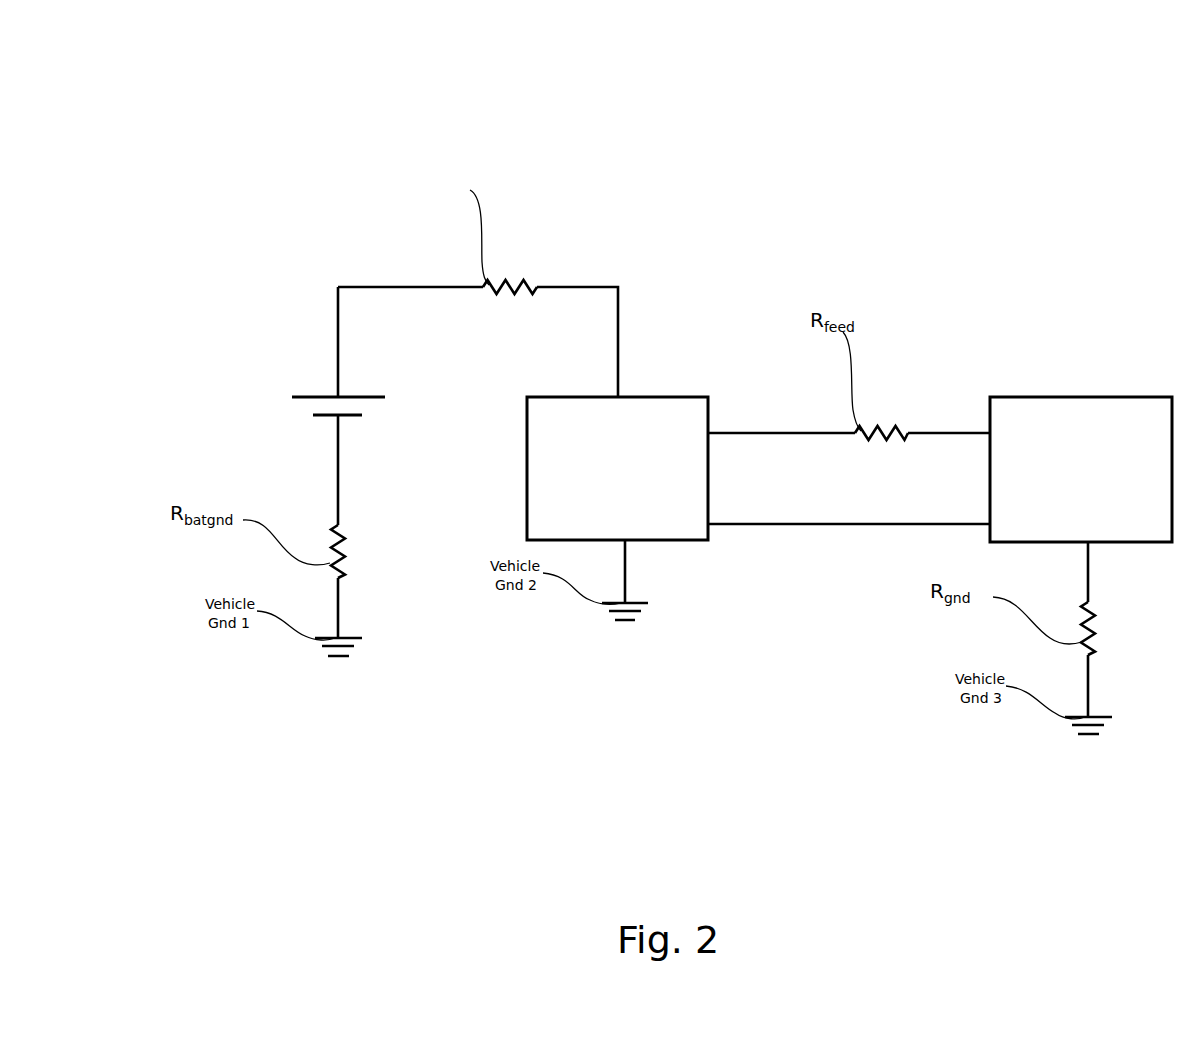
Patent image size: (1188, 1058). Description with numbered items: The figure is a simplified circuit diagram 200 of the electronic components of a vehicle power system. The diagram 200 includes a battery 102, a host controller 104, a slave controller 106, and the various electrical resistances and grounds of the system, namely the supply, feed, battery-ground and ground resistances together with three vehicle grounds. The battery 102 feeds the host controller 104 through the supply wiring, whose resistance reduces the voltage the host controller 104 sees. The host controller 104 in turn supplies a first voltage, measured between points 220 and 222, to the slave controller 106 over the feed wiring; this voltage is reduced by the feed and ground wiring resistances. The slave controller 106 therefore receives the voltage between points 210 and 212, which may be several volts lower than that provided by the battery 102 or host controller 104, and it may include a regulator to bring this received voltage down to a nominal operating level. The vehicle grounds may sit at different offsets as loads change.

The diagram 200 is at (207, 78).
The battery 102 is at (318, 397).
The host controller 104 is at (617, 468).
The slave controller 106 is at (1081, 469).
The point 210 is at (988, 433).
The point 220 is at (712, 433).
The point 222 is at (637, 541).
The point 212 is at (1100, 543).